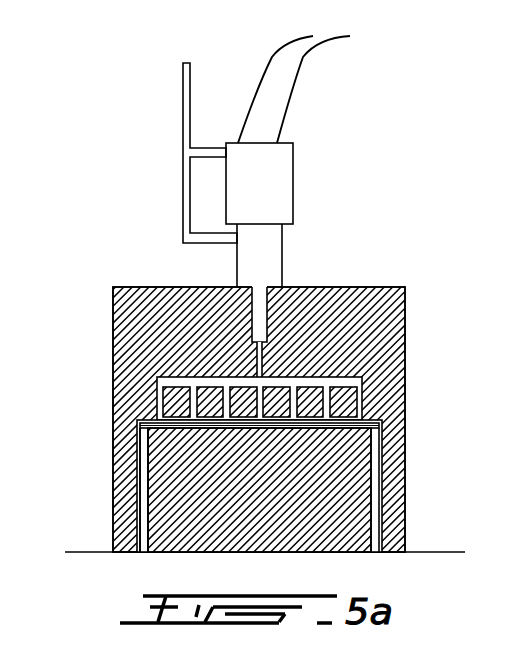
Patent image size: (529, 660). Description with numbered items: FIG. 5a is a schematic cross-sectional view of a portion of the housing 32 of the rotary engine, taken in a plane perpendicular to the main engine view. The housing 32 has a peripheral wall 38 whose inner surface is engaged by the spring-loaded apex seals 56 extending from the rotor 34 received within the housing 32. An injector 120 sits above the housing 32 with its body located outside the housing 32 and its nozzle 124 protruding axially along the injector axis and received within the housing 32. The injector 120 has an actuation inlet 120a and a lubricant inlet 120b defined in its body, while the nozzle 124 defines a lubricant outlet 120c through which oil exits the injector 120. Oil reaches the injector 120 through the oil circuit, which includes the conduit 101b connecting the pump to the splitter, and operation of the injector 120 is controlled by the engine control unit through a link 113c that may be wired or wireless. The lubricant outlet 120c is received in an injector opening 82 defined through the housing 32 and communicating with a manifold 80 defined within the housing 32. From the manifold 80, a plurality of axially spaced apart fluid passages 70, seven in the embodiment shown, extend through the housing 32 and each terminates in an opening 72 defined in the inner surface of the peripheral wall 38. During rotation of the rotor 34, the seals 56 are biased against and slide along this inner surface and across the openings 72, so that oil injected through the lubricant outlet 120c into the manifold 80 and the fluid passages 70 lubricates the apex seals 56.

The housing 32 is at (113, 287).
The injector opening 82 is at (255, 378).
The nozzle 124 is at (260, 310).
The manifold 80 is at (347, 385).
The fluid passage 70 is at (257, 390).
The apex seals 56 is at (382, 435).
The opening 72 is at (178, 423).
The rotor 34 is at (365, 483).
The peripheral wall 38 is at (148, 460).
The injector 120 is at (293, 183).
The conduit 101b is at (183, 71).
The link 113c is at (297, 88).
The actuation inlet 120a is at (222, 137).
The lubricant inlet 120b is at (233, 249).
The lubricant outlet 120c is at (280, 343).